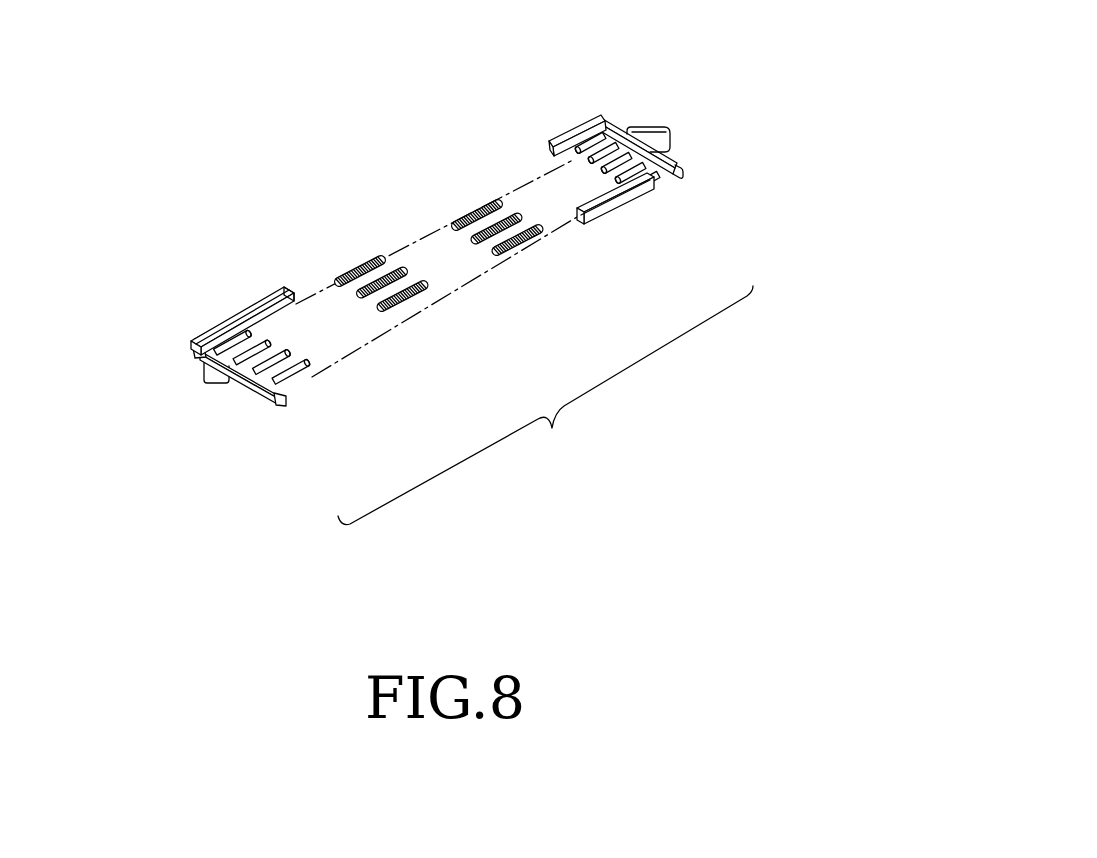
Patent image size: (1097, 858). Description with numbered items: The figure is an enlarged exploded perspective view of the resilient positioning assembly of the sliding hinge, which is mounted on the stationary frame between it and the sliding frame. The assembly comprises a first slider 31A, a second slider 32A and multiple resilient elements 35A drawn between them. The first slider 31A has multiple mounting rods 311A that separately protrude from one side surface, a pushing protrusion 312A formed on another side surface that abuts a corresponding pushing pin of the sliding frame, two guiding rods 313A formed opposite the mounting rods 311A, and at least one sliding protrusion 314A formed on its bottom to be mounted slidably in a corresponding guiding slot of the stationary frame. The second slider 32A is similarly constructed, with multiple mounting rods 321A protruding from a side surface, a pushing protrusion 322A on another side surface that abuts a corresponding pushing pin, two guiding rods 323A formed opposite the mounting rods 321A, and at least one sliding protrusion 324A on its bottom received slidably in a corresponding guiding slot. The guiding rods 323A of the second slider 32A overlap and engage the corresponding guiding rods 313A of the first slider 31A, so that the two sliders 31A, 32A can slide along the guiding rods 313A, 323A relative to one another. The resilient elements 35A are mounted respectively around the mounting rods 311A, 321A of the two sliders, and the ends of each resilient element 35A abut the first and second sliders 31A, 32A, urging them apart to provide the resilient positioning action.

The first slider 31A is at (231, 346).
The mounting rods 311A is at (297, 374).
The pushing protrusion 312A is at (210, 373).
The guiding rods 313A is at (268, 302).
The sliding protrusion 314A is at (277, 407).
The second slider 32A is at (628, 145).
The mounting rods 321A is at (620, 175).
The pushing protrusion 322A is at (663, 140).
The guiding rods 323A is at (562, 140).
The sliding protrusion 324A is at (667, 170).
The resilient elements 35A is at (478, 212).